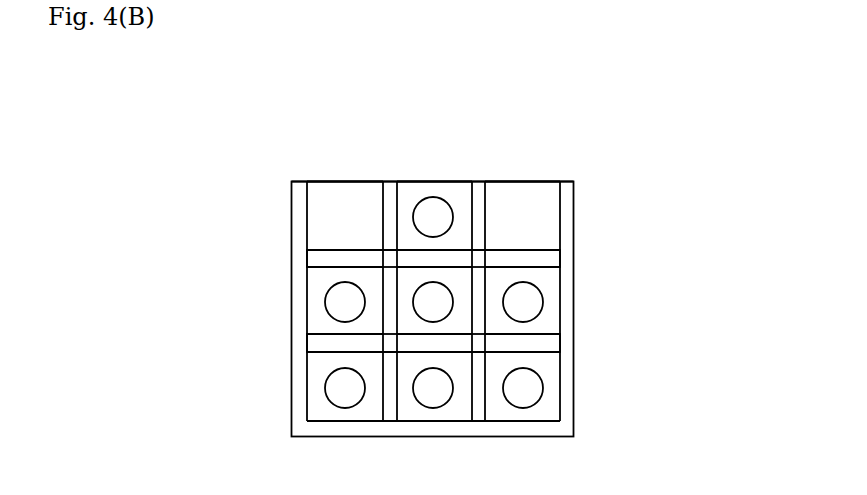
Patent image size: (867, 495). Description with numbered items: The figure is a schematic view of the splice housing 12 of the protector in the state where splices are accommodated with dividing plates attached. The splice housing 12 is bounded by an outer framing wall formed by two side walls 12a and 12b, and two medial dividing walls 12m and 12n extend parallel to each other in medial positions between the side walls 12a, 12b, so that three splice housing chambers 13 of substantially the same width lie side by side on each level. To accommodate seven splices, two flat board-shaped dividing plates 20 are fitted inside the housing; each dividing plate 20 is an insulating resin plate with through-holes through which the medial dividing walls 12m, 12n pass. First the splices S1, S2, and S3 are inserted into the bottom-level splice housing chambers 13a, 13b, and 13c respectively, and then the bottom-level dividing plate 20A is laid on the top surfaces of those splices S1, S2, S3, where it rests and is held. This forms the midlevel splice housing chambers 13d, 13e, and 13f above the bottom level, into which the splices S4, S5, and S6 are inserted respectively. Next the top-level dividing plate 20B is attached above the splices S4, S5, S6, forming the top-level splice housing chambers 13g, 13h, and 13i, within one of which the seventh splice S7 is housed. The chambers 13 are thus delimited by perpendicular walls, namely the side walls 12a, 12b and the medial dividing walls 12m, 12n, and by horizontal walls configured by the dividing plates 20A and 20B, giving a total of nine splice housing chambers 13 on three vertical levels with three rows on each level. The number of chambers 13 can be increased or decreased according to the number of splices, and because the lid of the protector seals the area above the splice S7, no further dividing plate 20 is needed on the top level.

The splice housing 12 is at (607, 318).
The side wall 12a is at (570, 410).
The side wall 12b is at (297, 405).
The medial dividing wall 12m is at (478, 186).
The medial dividing wall 12n is at (391, 186).
The splice housing chambers 13 is at (315, 237).
The bottom-level splice housing chamber 13a is at (317, 382).
The bottom-level splice housing chamber 13b is at (407, 370).
The bottom-level splice housing chamber 13c is at (550, 372).
The midlevel splice housing chamber 13d is at (315, 303).
The midlevel splice housing chamber 13e is at (458, 275).
The midlevel splice housing chamber 13f is at (553, 320).
The top-level splice housing chamber 13g is at (330, 212).
The top-level splice housing chamber 13h is at (418, 193).
The top-level splice housing chamber 13i is at (532, 202).
The dividing plate 20 is at (660, 215).
The bottom-level dividing plate 20A is at (452, 338).
The top-level dividing plate 20B is at (522, 258).
The splice S1 is at (345, 388).
The splice S2 is at (433, 388).
The splice S3 is at (523, 388).
The splice S4 is at (345, 302).
The splice S5 is at (433, 302).
The splice S6 is at (523, 302).
The splice S7 is at (433, 217).